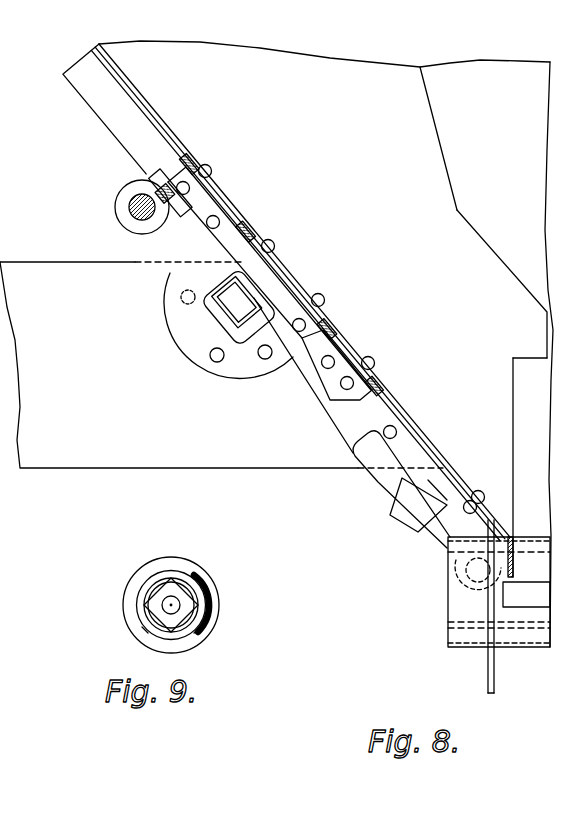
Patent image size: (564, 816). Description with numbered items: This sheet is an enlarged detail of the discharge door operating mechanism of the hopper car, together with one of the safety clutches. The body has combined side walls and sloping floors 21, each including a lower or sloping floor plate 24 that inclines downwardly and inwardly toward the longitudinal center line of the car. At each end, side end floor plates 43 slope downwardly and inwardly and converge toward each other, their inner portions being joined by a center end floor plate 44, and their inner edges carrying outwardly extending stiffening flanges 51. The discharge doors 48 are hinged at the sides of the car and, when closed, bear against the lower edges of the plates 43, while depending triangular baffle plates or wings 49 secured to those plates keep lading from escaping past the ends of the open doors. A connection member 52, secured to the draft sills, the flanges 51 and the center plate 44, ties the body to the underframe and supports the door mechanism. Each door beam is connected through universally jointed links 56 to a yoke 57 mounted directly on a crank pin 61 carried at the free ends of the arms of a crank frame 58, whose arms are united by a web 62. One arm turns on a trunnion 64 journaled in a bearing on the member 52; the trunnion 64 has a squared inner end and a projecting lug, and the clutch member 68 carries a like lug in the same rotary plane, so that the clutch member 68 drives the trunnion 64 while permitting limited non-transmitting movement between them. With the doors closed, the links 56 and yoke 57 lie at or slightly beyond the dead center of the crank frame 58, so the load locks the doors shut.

In FIG. 8, the combined side wall and sloping floor 21 is at (486, 354).
In FIG. 8, the lower or sloping floor plate 24 is at (502, 250).
In FIG. 8, the side end floor plate 43 is at (275, 254).
In FIG. 8, the center end floor plate 44 is at (110, 67).
In FIG. 8, the discharge door 48 is at (522, 420).
In FIG. 8, the baffle plate or wing 49 is at (487, 682).
In FIG. 8, the stiffening flange 51 is at (113, 105).
In FIG. 8, the connection member 52 is at (188, 330).
In FIG. 8, the universally jointed link 56 is at (348, 423).
In FIG. 8, the yoke 57 is at (122, 198).
In FIG. 8, the crank frame 58 is at (177, 277).
In FIG. 8, the crank pin 61 is at (142, 198).
In FIG. 8, the web 62 is at (273, 250).
In FIG. 9, the trunnion 64 is at (177, 592).
In FIG. 9, the clutch member 68 is at (213, 627).